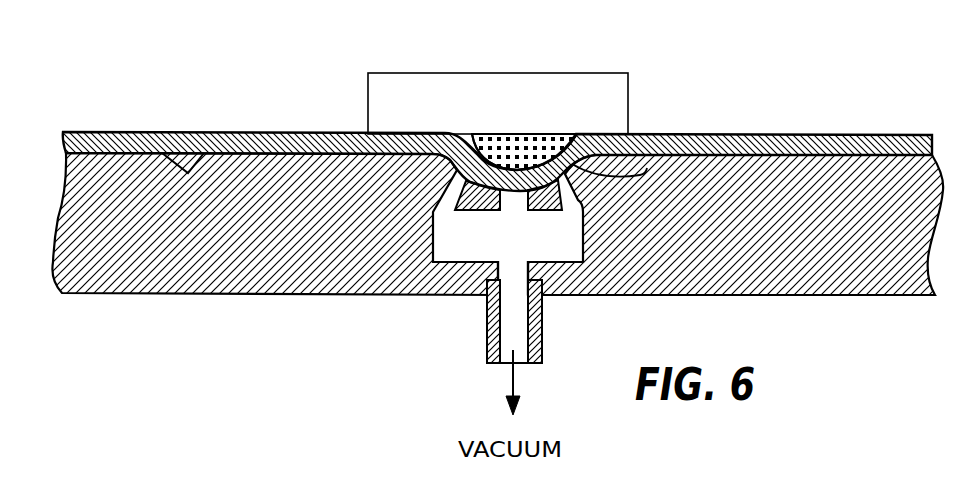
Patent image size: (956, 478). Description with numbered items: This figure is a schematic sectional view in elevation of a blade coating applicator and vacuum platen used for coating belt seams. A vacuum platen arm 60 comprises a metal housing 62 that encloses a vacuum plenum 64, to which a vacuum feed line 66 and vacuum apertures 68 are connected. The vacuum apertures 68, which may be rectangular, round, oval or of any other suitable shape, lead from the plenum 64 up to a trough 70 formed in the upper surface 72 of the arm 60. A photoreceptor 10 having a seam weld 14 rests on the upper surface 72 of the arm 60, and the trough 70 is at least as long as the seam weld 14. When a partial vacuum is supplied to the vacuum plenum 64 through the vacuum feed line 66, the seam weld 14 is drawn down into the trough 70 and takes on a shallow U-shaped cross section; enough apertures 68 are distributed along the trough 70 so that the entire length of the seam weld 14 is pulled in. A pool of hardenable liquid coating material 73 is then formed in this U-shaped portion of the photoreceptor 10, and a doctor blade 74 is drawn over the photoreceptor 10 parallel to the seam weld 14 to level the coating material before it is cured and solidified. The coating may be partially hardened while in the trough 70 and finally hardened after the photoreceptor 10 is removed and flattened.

The photoreceptor 10 is at (770, 120).
The seam weld 14 is at (486, 133).
The vacuum platen arm 60 is at (276, 315).
The metal housing 62 is at (787, 297).
The vacuum plenum 64 is at (479, 263).
The vacuum feed line 66 is at (543, 322).
The vacuum apertures 68 is at (503, 243).
The trough 70 is at (668, 155).
The upper surface 72 is at (205, 153).
The hardenable liquid coating material 73 is at (538, 147).
The doctor blade 74 is at (421, 72).